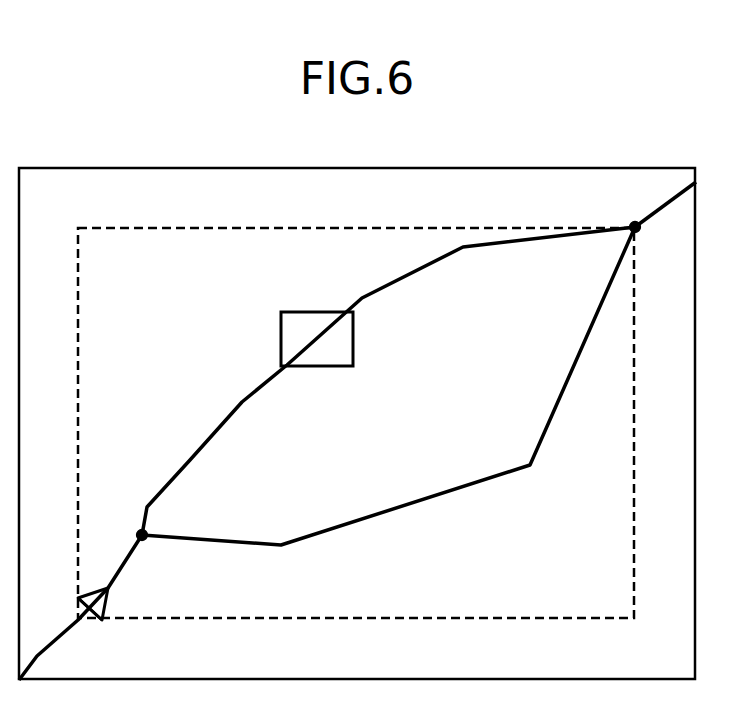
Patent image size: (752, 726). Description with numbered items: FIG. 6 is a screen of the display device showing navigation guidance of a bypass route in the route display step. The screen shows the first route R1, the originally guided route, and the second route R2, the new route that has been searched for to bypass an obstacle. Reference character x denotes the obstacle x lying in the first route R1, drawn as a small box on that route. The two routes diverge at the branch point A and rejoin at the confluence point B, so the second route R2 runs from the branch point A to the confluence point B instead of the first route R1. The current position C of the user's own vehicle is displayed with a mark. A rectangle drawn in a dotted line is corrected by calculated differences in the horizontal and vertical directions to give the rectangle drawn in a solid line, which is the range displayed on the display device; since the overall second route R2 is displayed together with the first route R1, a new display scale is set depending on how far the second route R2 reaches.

The branch point A is at (140, 532).
The confluence point B is at (640, 232).
The current position of the user's own vehicle C is at (110, 598).
The route 1 R1 is at (212, 432).
The route 2 R2 is at (357, 522).
The obstacle x is at (306, 310).